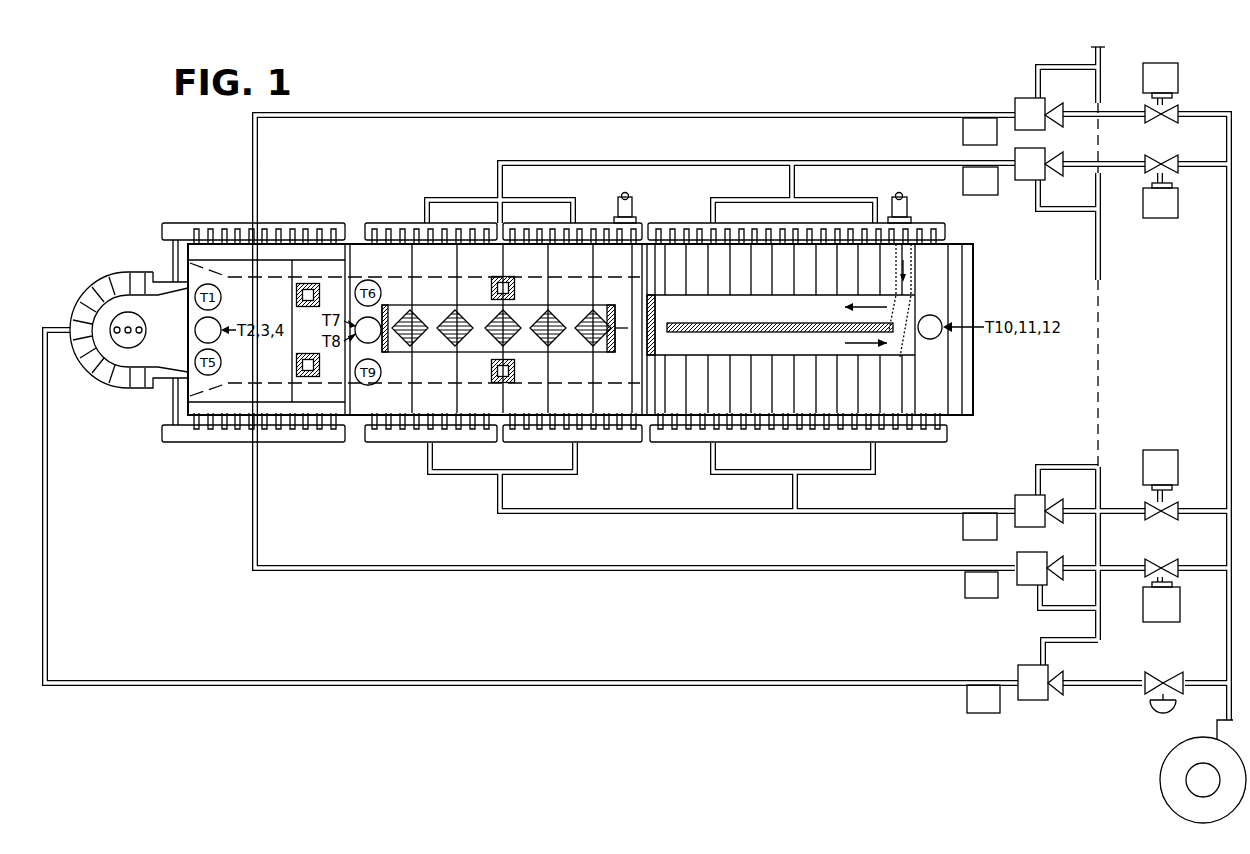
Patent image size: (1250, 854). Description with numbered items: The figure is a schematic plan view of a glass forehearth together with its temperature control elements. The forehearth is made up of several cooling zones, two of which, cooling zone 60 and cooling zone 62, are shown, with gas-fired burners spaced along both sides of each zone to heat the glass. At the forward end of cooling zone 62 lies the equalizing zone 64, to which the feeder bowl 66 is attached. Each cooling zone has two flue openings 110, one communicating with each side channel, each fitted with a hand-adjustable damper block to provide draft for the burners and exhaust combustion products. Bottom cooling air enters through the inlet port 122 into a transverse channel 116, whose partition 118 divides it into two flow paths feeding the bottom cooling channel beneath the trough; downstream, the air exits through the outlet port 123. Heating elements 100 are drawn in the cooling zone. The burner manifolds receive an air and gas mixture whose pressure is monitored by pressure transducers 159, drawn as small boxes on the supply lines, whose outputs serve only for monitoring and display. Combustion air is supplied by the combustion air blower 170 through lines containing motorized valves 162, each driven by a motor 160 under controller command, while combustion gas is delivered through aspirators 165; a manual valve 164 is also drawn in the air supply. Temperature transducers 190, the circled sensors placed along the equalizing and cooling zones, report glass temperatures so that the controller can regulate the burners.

The cooling zone 60 is at (433, 286).
The cooling zone 62 is at (716, 292).
The equalizing zone 64 is at (235, 215).
The feeder bowl 66 is at (100, 282).
The heating elements 100 is at (453, 338).
The flue opening 110 is at (503, 277).
The transverse channel 116 is at (915, 252).
The partition 118 is at (968, 251).
The inlet port 122 is at (910, 204).
The outlet port 123 is at (598, 210).
The pressure transducer 159 is at (950, 425).
The motor 160 is at (1190, 340).
The motorized valve 162 is at (1188, 333).
The manual valve 164 is at (1160, 672).
The aspirator 165 is at (1017, 407).
The combustion air blower 170 is at (1175, 755).
The temperature transducer 190 is at (360, 262).